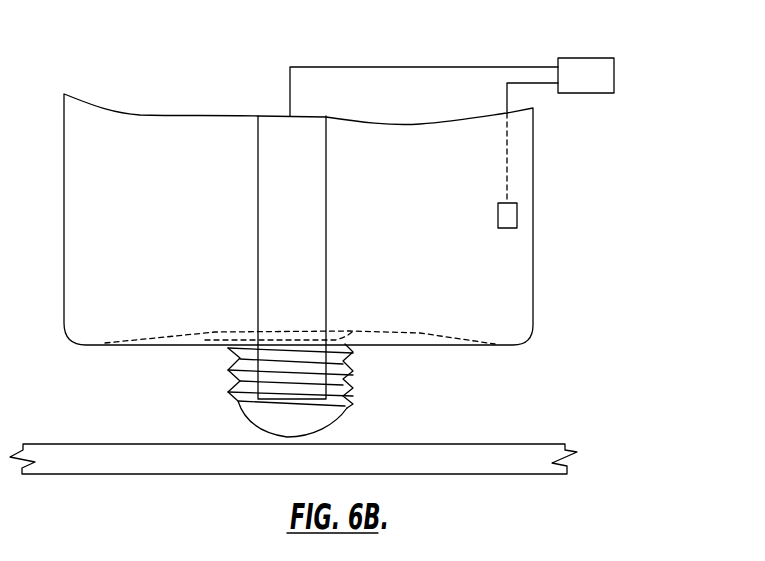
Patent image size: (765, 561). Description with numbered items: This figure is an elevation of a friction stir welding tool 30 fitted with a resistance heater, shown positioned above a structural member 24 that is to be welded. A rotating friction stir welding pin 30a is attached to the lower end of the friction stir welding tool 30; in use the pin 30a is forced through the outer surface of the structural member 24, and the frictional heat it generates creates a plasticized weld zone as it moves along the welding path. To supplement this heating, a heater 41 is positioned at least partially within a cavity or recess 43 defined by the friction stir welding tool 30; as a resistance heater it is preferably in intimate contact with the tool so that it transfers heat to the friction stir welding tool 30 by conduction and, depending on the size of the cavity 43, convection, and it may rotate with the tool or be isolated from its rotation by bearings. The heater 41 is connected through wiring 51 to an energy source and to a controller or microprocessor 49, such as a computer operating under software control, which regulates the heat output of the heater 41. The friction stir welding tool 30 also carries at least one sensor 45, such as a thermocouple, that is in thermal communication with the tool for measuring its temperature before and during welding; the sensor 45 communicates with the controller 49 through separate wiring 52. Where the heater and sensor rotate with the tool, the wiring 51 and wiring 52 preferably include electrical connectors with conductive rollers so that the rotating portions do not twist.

The structural member 24 is at (574, 451).
The friction stir welding tool 30 is at (523, 257).
The friction stir welding pin 30a is at (353, 378).
The heater 41 is at (310, 206).
The cavity or recess 43 is at (337, 248).
The sensor 45 is at (508, 217).
The controller or microprocessor 49 is at (598, 65).
The wiring 51 is at (370, 67).
The wiring 52 is at (507, 100).